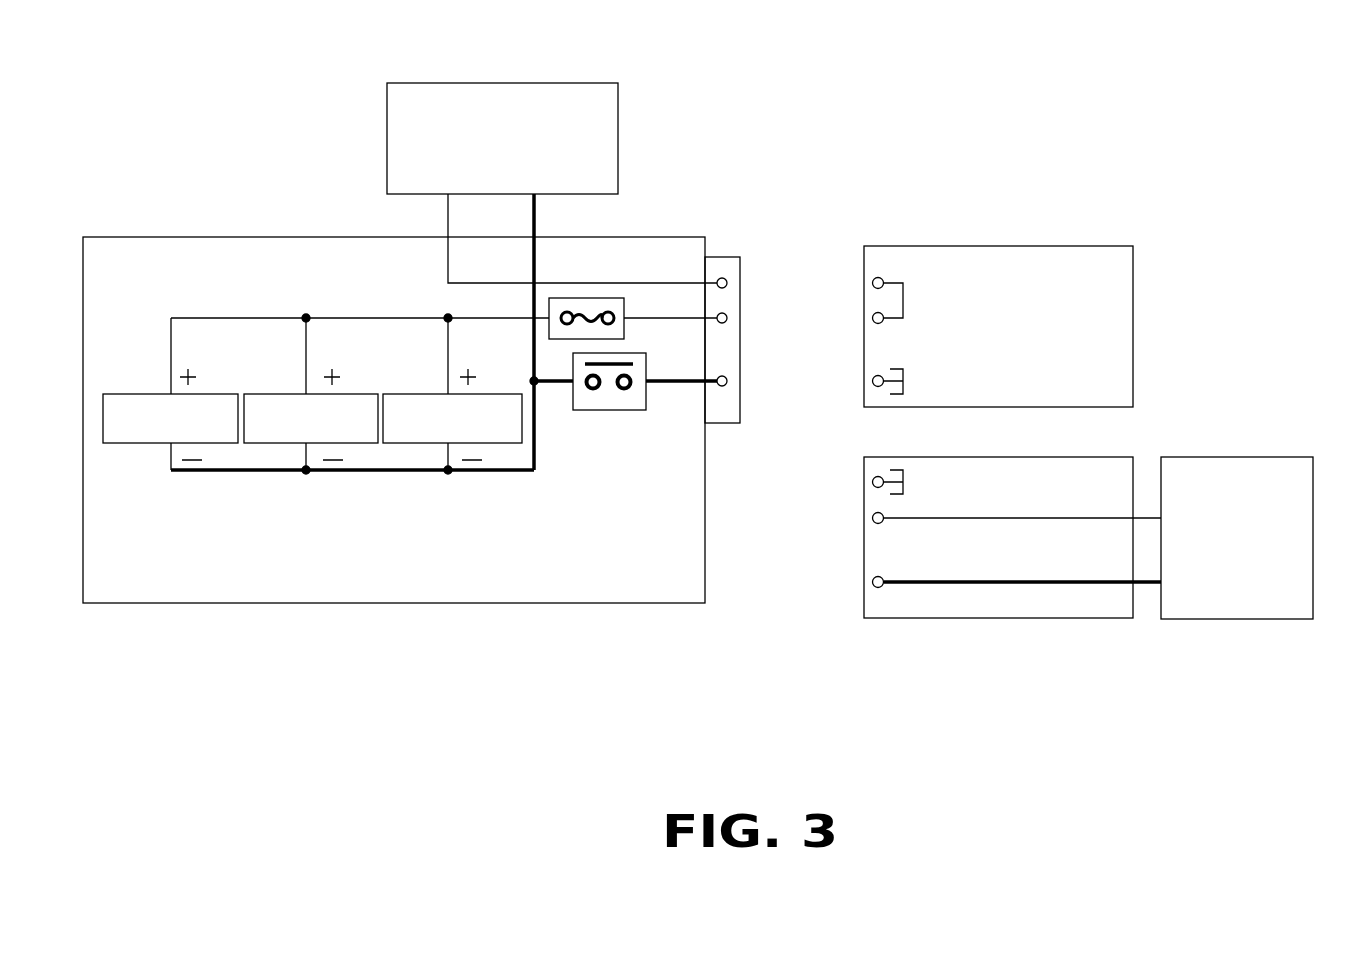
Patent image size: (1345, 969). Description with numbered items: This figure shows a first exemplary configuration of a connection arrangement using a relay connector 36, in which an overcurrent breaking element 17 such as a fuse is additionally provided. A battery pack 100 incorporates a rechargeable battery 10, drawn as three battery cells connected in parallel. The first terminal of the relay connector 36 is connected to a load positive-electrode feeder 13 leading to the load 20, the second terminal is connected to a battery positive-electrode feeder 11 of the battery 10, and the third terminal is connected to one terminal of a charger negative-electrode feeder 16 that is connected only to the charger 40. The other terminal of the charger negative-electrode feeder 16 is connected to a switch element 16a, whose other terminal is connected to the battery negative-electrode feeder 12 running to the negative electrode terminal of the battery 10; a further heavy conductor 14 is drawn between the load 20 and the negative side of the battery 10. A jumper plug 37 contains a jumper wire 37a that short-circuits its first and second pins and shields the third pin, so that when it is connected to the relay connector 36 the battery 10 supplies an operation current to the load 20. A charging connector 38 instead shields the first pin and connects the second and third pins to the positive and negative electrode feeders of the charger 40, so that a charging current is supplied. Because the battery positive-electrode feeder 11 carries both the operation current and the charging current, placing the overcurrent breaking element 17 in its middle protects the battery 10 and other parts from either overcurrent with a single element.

The battery 10 is at (159, 393).
The battery positive-electrode feeder 11 is at (470, 320).
The battery negative-electrode feeder 12 is at (537, 417).
The load positive-electrode feeder 13 is at (448, 260).
The negative output wire 14 is at (537, 223).
The charger negative-electrode feeder 16 is at (625, 419).
The switch element 16a is at (620, 410).
The overcurrent breaking element 17 is at (625, 325).
The load 20 is at (545, 82).
The relay connector 36 is at (720, 257).
The jumper plug 37 is at (984, 290).
The jumper wire 37a is at (903, 305).
The charging connector 38 is at (983, 618).
The charger 40 is at (1241, 457).
The battery pack 100 is at (397, 603).